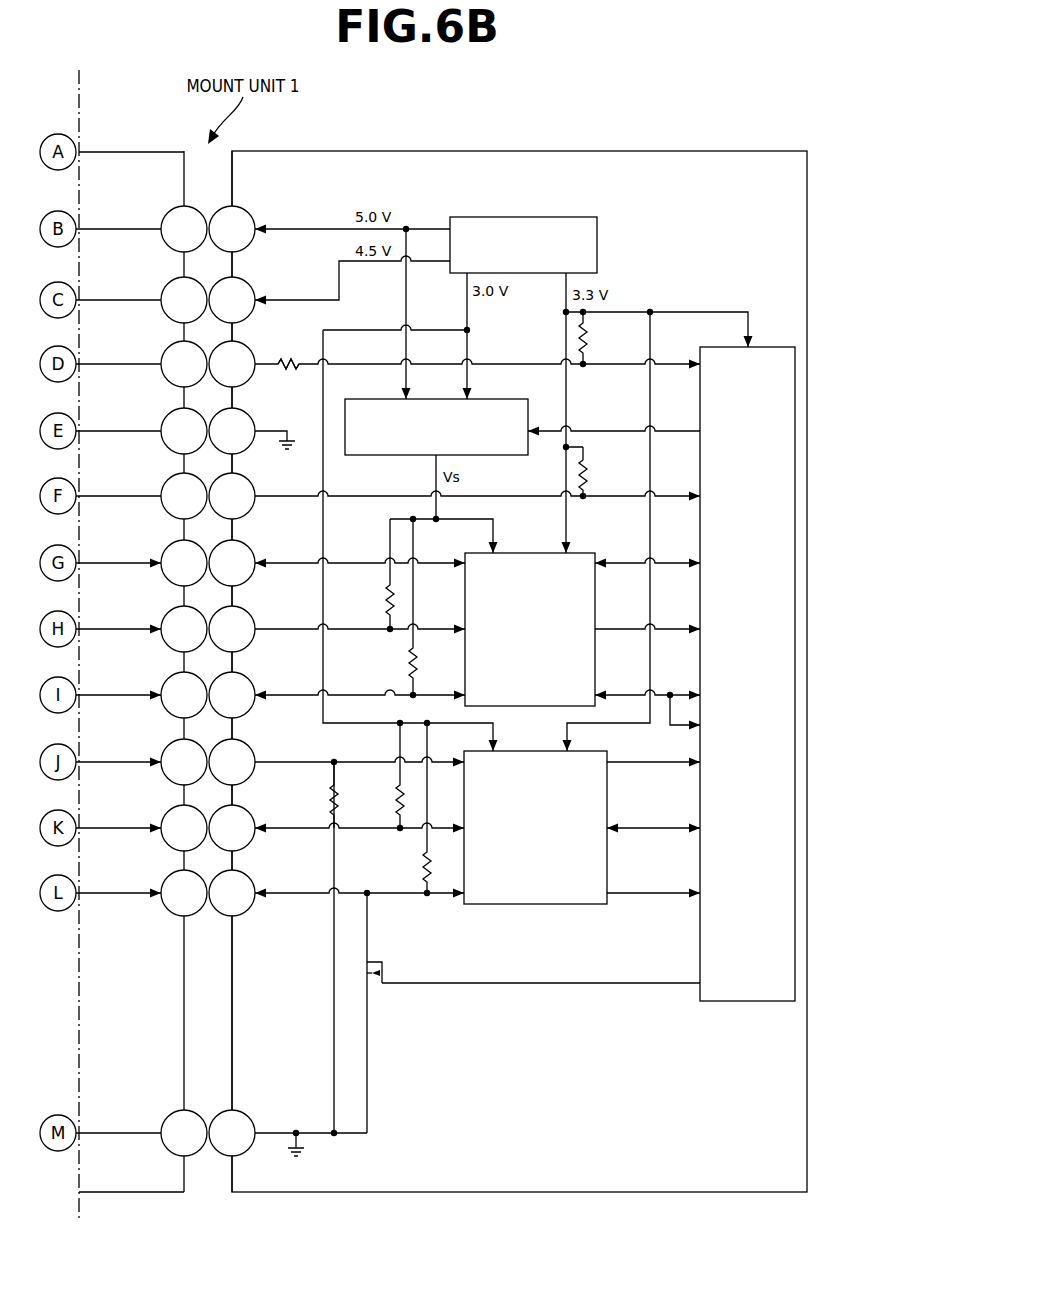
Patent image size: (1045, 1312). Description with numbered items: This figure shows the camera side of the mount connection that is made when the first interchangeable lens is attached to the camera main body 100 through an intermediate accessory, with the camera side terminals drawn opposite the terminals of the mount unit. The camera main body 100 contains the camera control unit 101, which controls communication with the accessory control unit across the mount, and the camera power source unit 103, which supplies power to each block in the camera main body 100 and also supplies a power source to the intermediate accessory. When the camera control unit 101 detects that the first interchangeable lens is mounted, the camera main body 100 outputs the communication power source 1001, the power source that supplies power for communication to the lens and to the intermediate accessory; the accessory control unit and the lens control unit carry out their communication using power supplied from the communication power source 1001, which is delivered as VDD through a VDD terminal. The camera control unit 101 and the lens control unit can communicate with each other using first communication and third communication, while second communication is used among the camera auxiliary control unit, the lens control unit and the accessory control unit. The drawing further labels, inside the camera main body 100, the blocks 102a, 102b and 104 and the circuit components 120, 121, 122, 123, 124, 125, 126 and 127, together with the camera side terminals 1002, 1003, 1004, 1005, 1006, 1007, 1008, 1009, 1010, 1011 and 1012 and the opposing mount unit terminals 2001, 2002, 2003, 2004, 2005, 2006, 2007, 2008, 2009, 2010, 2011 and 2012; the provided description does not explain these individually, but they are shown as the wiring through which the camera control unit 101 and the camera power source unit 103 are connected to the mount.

The camera main body 100 is at (725, 151).
The camera control unit 101 is at (743, 1001).
The first communication I/F unit 102a is at (530, 553).
The second and third communication I/F unit 102b is at (540, 904).
The camera power source unit 103 is at (597, 245).
The power source switching unit 104 is at (477, 399).
The resistor 120 is at (409, 665).
The resistor 121 is at (385, 603).
The resistor 122 is at (330, 802).
The resistor 123 is at (423, 872).
The resistor 124 is at (396, 802).
The resistor 125 is at (578, 340).
The resistor 126 is at (300, 364).
The resistor 127 is at (588, 475).
The communication power source 1001 is at (248, 212).
The VBAT terminal (camera) 1002 is at (275, 268).
The TYPE terminal (camera) 1003 is at (275, 340).
The PGND terminal (camera) 1004 is at (275, 403).
The MIF terminal (camera) 1005 is at (280, 476).
The DCL terminal (camera) 1006 is at (275, 533).
The DLC terminal (camera) 1007 is at (275, 600).
The LCLK terminal (camera) 1008 is at (275, 666).
The DLC2 terminal (camera) 1009 is at (275, 731).
The DCA terminal (camera) 1010 is at (275, 798).
The CS terminal (camera) 1011 is at (248, 909).
The DGND terminal (camera) 1012 is at (248, 1117).
The VDD terminal (mount unit) 2001 is at (168, 212).
The VBAT terminal (mount unit) 2002 is at (168, 284).
The TYPE terminal (mount unit) 2003 is at (168, 348).
The PGND terminal (mount unit) 2004 is at (168, 415).
The MIF terminal (mount unit) 2005 is at (168, 480).
The DCL terminal (mount unit) 2006 is at (168, 547).
The DLC terminal (mount unit) 2007 is at (168, 613).
The LCLK terminal (mount unit) 2008 is at (168, 679).
The DLC2 terminal (mount unit) 2009 is at (168, 746).
The DCA terminal (mount unit) 2010 is at (168, 812).
The CS terminal (mount unit) 2011 is at (168, 877).
The DGND terminal (mount unit) 2012 is at (168, 1117).